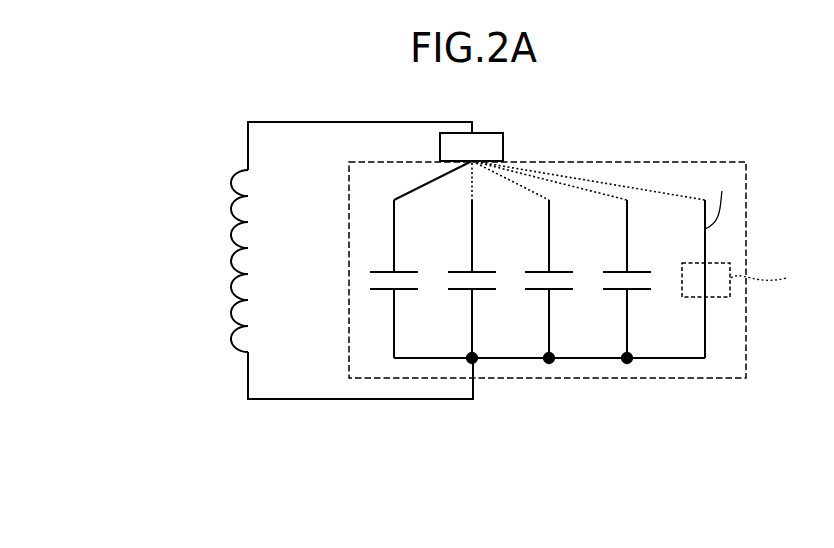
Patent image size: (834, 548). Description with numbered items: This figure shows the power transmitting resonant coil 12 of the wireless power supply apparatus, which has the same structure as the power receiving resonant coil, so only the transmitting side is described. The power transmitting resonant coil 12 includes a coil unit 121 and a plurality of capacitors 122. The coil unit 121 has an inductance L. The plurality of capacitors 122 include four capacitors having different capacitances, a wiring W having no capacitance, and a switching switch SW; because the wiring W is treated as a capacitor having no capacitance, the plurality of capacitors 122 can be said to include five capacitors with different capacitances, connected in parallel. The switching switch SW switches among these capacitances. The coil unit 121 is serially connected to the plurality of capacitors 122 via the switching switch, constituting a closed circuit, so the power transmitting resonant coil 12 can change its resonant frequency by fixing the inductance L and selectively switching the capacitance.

The power transmitting resonant coil 12 is at (713, 387).
The coil unit 121 is at (232, 206).
The plurality of capacitors 122 is at (748, 196).